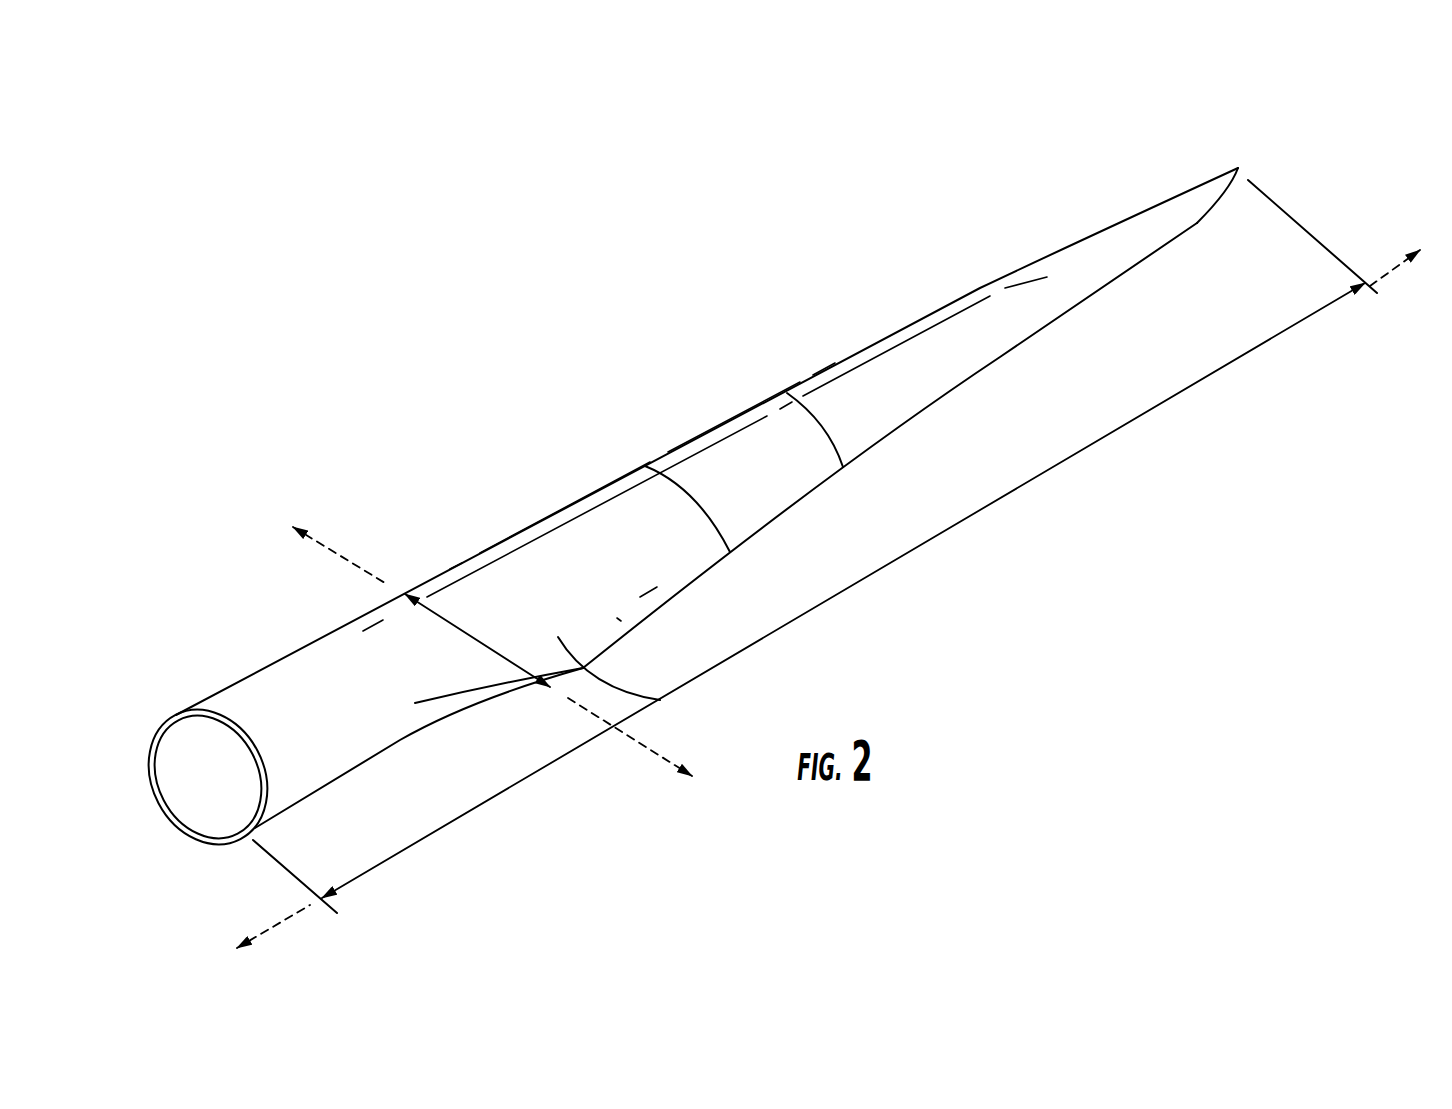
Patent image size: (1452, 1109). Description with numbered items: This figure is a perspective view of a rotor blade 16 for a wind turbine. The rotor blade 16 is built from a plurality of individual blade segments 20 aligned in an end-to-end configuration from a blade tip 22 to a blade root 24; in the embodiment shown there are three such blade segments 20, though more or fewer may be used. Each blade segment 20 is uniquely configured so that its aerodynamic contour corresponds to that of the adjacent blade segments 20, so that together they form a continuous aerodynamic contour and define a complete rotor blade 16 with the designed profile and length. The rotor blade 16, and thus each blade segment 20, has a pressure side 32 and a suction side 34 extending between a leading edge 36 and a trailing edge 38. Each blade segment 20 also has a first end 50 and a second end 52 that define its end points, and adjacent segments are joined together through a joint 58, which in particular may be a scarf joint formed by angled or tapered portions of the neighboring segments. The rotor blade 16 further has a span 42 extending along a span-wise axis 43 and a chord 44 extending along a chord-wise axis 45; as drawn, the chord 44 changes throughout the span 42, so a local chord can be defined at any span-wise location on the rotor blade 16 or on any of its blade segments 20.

The rotor blade 16 is at (365, 383).
The blade segment 20 is at (540, 502).
The blade tip 22 is at (1252, 158).
The blade root 24 is at (200, 787).
The pressure side 32 is at (480, 725).
The suction side 34 is at (660, 700).
The leading edge 36 is at (502, 540).
The trailing edge 38 is at (613, 645).
The span 42 is at (1033, 478).
The span-wise axis 43 is at (277, 923).
The chord 44 is at (463, 630).
The chord-wise axis 45 is at (330, 550).
The first end 50 is at (1238, 165).
The second end 52 is at (218, 715).
The joint 58 is at (728, 552).